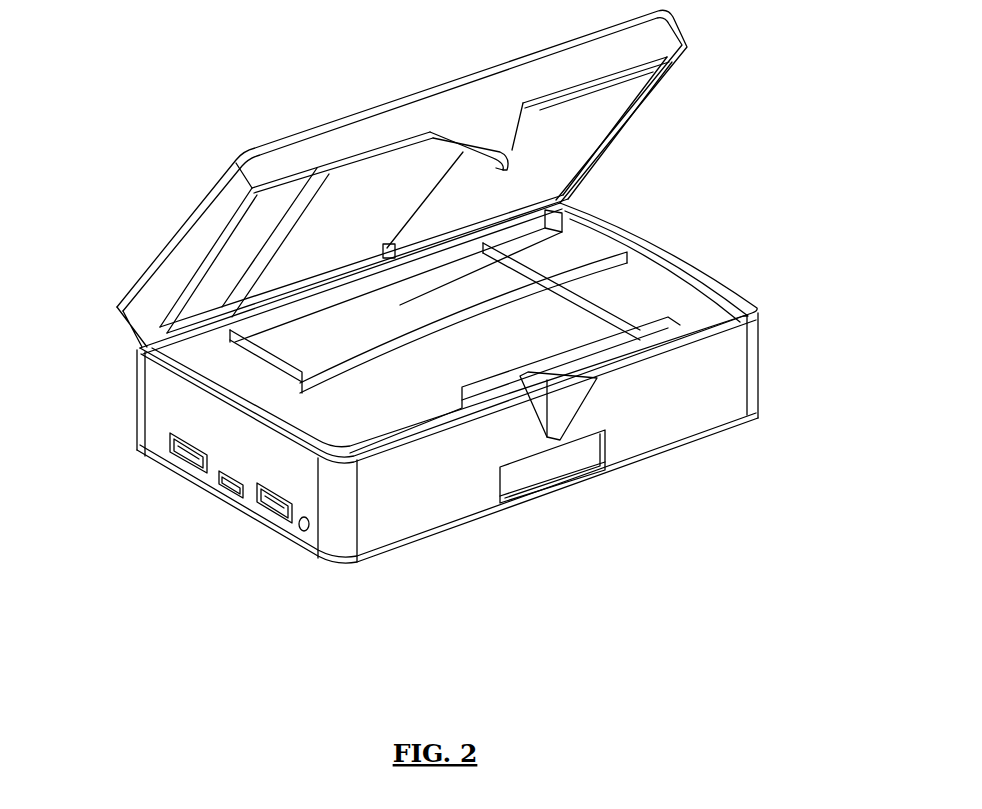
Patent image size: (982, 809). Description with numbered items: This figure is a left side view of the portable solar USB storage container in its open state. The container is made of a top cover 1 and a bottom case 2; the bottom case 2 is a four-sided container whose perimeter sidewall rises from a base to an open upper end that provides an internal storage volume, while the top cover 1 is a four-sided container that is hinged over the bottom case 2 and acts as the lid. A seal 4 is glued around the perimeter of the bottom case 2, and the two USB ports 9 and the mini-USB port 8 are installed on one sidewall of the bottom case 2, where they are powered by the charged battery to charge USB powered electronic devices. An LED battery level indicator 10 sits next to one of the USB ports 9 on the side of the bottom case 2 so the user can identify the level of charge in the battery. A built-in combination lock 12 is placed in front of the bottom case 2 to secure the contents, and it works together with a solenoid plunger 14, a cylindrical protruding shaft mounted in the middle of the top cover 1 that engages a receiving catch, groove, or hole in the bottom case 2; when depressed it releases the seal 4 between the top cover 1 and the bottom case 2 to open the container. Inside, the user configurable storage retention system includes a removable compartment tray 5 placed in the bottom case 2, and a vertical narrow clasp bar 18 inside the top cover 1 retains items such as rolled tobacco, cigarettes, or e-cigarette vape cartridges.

The top cover 1 is at (237, 152).
The bottom case 2 is at (757, 417).
The seal 4 is at (693, 262).
The removable compartment tray 5 is at (417, 393).
The mini-USB port 8 is at (207, 495).
The USB ports 9 is at (160, 448).
The LED battery level indicator 10 is at (307, 531).
The combination lock 12 is at (570, 455).
The solenoid plunger 14 is at (512, 167).
The vertical narrow clasp bar 18 is at (277, 231).